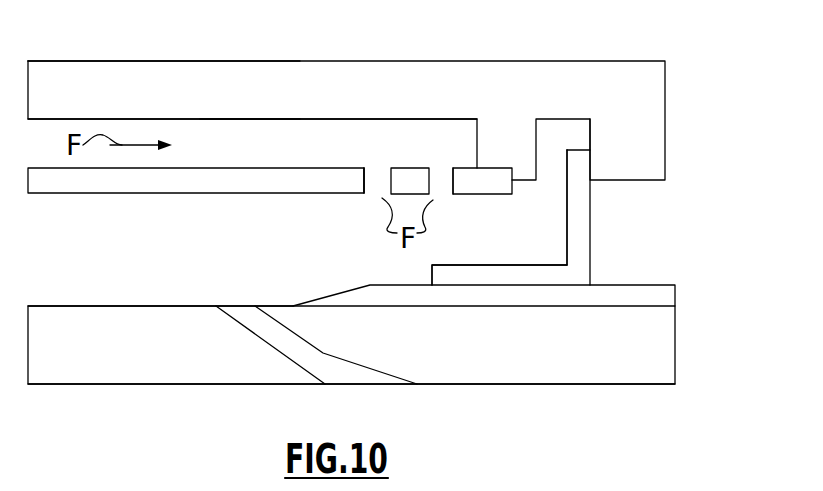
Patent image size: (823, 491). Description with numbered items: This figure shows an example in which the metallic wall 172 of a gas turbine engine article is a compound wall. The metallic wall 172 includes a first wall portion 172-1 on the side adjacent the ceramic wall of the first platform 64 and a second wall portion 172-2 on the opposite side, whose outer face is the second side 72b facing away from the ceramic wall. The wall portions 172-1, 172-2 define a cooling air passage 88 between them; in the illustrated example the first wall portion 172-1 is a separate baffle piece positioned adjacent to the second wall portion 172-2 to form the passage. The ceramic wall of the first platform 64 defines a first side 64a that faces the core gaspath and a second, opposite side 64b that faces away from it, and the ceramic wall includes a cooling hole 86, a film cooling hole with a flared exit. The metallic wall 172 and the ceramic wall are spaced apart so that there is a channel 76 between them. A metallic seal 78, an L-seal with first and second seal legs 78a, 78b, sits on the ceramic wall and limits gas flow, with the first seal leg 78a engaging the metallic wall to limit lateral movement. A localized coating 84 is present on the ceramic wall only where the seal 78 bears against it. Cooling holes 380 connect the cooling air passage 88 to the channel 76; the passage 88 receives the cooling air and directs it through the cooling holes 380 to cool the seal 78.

The metallic wall 172 is at (540, 58).
The second side 72b is at (84, 61).
The second wall portion 172-2 is at (188, 92).
The first wall portion 172-1 is at (213, 183).
The cooling air passage 88 is at (248, 138).
The cooling holes 380 is at (378, 220).
The seal 78 is at (603, 232).
The first seal leg 78a is at (577, 203).
The second seal leg 78b is at (483, 265).
The localized coating 84 is at (618, 292).
The first platform 64 is at (690, 349).
The first side 64a is at (642, 385).
The second side 64b is at (160, 306).
The cooling hole 86 is at (280, 337).
The channel 76 is at (248, 273).